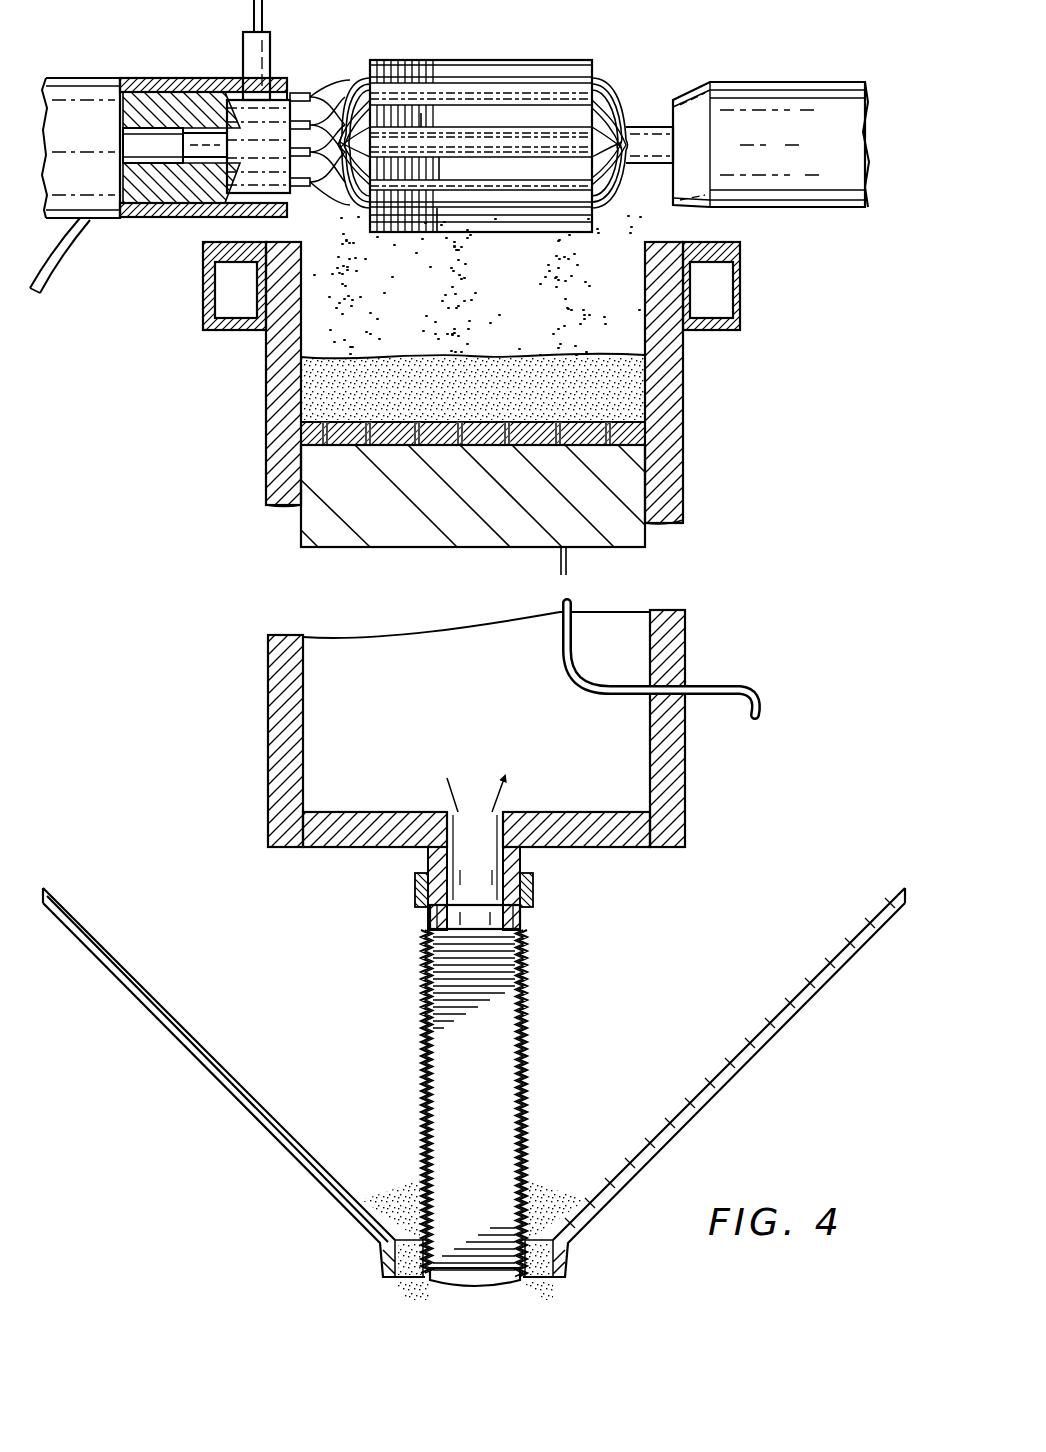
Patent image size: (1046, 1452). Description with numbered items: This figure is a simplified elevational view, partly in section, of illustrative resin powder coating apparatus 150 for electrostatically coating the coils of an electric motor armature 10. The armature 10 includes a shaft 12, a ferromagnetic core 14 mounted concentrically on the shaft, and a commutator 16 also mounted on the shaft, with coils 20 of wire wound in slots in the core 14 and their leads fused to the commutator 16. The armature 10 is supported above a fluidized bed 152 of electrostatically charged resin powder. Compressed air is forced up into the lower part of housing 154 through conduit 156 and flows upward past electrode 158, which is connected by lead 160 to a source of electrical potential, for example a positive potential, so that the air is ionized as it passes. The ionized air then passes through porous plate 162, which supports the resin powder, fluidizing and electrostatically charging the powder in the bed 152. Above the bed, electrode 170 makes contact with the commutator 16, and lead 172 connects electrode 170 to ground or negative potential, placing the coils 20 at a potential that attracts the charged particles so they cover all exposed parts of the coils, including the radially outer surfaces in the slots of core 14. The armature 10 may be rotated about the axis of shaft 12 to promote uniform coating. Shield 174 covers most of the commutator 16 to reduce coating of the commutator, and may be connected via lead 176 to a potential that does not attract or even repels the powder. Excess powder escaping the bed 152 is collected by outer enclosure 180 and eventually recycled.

The electric motor armature 10 is at (603, 120).
The shaft 12 is at (645, 152).
The ferromagnetic core 14 is at (575, 62).
The commutator 16 is at (243, 82).
The coils 20 is at (608, 96).
The apparatus 150 is at (436, 395).
The fluidized bed 152 is at (633, 377).
The housing 154 is at (536, 725).
The conduit 156 is at (487, 867).
The electrode 158 is at (632, 497).
The lead 160 is at (748, 702).
The porous plate 162 is at (640, 435).
The electrode 170 is at (262, 48).
The lead 172 is at (265, 4).
The shield 174 is at (192, 215).
The lead 176 is at (60, 266).
The outer enclosure 180 is at (766, 1042).